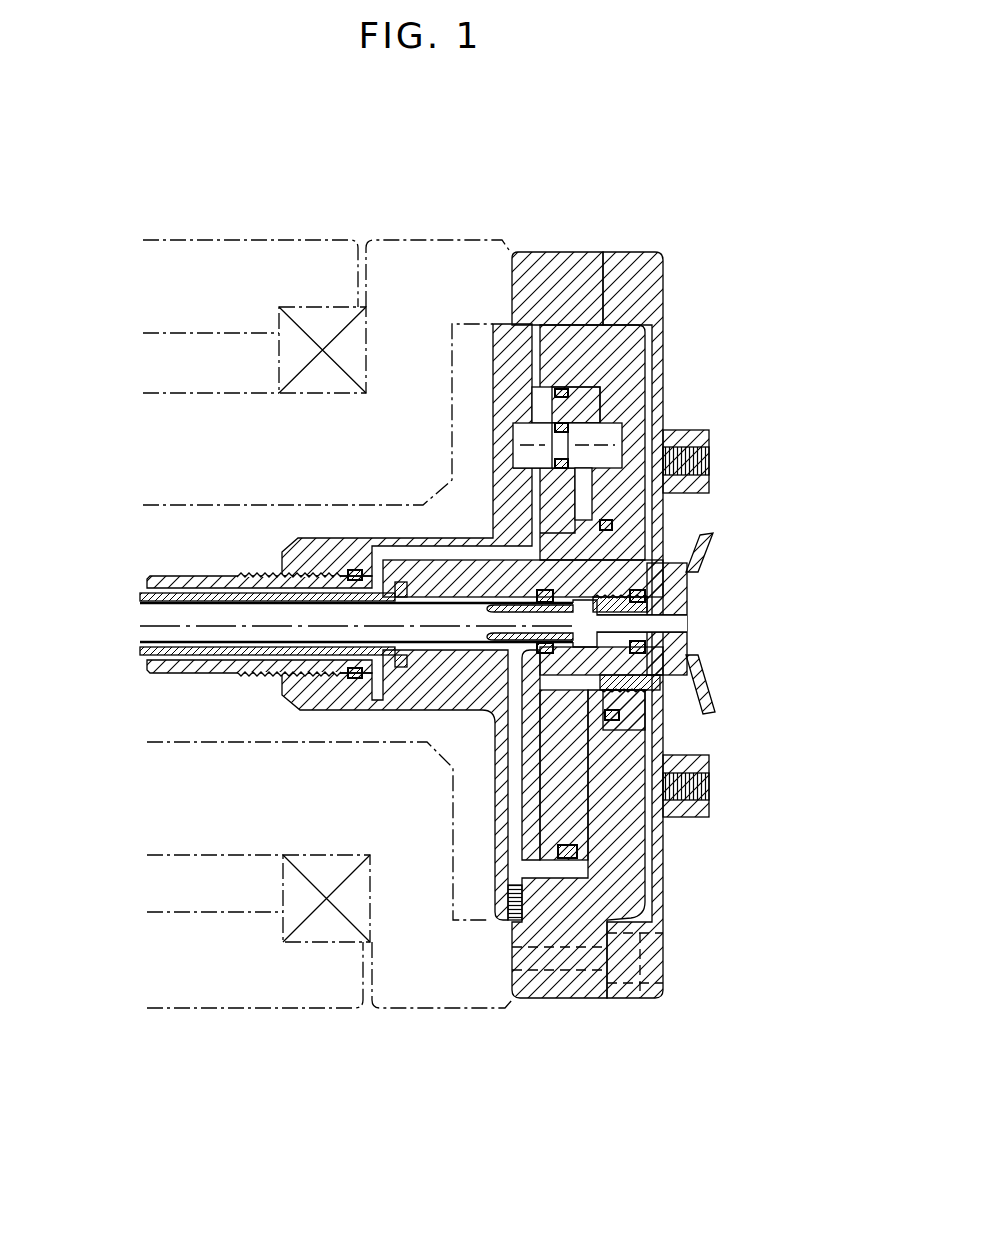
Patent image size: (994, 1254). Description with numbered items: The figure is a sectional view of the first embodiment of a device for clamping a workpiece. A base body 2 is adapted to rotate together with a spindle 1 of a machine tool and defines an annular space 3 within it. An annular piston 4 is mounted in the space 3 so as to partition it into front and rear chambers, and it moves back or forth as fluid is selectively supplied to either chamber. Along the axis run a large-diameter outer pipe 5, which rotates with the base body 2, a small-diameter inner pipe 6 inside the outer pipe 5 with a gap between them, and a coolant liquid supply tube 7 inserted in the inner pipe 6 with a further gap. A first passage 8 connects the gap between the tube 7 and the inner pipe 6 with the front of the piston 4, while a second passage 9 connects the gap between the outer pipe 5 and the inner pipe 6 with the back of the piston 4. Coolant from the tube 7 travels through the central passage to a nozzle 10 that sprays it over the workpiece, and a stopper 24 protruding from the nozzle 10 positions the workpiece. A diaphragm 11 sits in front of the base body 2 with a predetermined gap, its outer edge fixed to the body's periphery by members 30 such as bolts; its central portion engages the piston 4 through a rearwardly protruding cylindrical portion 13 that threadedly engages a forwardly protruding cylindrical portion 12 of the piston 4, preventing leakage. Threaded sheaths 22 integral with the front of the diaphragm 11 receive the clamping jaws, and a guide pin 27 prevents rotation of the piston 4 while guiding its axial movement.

The spindle 1 is at (324, 267).
The base body 2 is at (557, 282).
The space 3 is at (597, 850).
The piston 4 is at (563, 780).
The outer pipe 5 is at (170, 576).
The inner pipe 6 is at (147, 597).
The coolant liquid supply tube 7 is at (162, 626).
The first passage 8 is at (563, 873).
The second passage 9 is at (425, 552).
The nozzle 10 is at (670, 622).
The diaphragm 11 is at (663, 345).
The forwardly protruding cylindrical portion 12 is at (650, 708).
The rearwardly protruding cylindrical portion 13 is at (640, 686).
The threaded sheath 22 is at (709, 447).
The stopper 24 is at (715, 540).
The guide pin 27 is at (520, 440).
The member 30 is at (636, 1000).